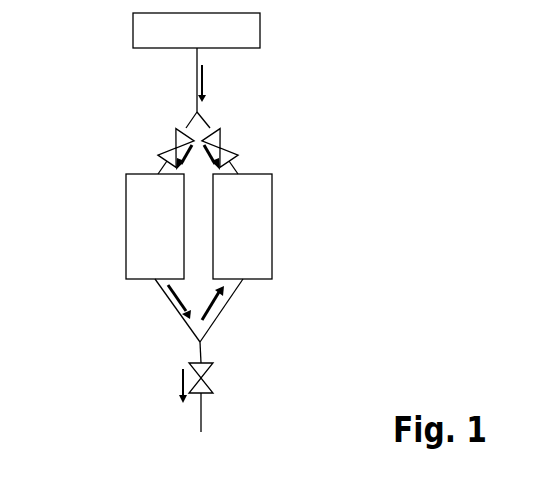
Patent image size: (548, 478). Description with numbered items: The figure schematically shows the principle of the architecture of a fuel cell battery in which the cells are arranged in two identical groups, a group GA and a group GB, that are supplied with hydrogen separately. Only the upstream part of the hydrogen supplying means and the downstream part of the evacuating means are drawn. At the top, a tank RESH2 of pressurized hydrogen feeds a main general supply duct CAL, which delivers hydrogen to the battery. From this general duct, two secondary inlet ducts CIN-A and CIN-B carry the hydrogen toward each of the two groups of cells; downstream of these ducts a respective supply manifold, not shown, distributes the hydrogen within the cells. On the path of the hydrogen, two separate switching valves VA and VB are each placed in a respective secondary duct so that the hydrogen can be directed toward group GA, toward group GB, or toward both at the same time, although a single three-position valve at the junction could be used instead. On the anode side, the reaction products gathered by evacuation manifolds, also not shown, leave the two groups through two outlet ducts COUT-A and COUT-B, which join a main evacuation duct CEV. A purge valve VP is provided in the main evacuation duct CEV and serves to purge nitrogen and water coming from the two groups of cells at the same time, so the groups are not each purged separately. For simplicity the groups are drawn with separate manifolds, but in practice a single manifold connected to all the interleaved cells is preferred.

The tank of pressurized hydrogen RESH2 is at (196, 30).
The main general supply duct CAL is at (193, 64).
The secondary inlet duct CIN-A is at (188, 121).
The secondary inlet duct CIN-B is at (207, 118).
The switching valve VA is at (158, 142).
The switching valve VB is at (233, 151).
The group of cells GA is at (155, 226).
The group of cells GB is at (242, 226).
The outlet duct COUT-A is at (190, 312).
The outlet duct COUT-B is at (223, 303).
The purge valve VP is at (213, 366).
The main evacuation duct CEV is at (203, 417).